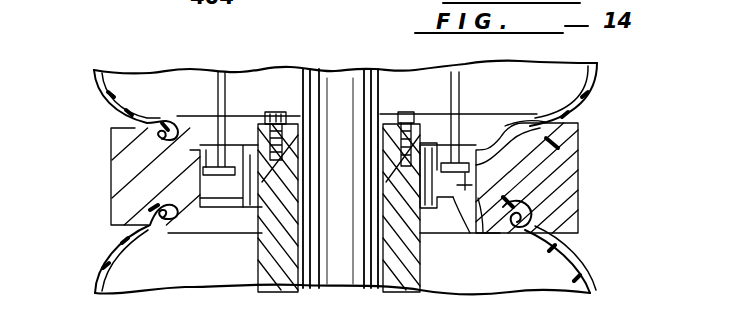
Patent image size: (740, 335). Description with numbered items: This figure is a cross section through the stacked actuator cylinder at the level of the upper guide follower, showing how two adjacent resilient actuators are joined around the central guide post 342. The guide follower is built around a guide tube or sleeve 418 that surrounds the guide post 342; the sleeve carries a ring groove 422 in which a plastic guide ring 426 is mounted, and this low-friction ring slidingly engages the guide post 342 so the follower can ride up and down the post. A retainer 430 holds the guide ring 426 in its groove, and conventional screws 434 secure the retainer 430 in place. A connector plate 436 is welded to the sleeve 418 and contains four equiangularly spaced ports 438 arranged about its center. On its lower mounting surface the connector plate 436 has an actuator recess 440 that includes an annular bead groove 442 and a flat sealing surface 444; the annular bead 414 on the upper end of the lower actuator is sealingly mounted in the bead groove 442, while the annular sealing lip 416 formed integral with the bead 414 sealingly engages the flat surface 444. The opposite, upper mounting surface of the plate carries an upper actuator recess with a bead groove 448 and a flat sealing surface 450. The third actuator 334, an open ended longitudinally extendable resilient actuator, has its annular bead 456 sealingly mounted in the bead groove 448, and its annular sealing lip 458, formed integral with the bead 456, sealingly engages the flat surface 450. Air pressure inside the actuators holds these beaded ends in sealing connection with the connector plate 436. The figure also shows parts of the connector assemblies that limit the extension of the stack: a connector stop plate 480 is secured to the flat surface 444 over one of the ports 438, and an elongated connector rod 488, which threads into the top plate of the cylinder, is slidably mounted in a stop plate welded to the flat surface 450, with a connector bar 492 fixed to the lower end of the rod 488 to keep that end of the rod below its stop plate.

The third actuator 334 is at (597, 64).
The guide post 342 is at (298, 288).
The annular bead 414 is at (150, 209).
The annular sealing lip 416 is at (187, 208).
The guide tube or sleeve 418 is at (268, 255).
The ring groove 422 is at (416, 233).
The plastic guide ring 426 is at (258, 207).
The retainer 430 is at (422, 140).
The screws 434 is at (405, 112).
The connector plate 436 is at (582, 143).
The ports 438 is at (456, 189).
The actuator recess 440 is at (457, 200).
The annular bead groove 442 is at (574, 207).
The flat sealing surface 444 is at (508, 204).
The bead groove 448 is at (582, 130).
The flat sealing surface 450 is at (580, 160).
The annular bead 456 is at (155, 143).
The annular sealing lip 458 is at (185, 147).
The connector stop plate 480 is at (237, 145).
The connector rod 488 is at (221, 85).
The connector bar 492 is at (207, 175).